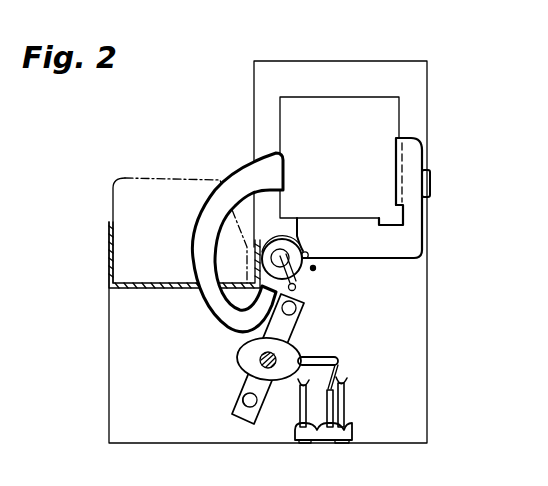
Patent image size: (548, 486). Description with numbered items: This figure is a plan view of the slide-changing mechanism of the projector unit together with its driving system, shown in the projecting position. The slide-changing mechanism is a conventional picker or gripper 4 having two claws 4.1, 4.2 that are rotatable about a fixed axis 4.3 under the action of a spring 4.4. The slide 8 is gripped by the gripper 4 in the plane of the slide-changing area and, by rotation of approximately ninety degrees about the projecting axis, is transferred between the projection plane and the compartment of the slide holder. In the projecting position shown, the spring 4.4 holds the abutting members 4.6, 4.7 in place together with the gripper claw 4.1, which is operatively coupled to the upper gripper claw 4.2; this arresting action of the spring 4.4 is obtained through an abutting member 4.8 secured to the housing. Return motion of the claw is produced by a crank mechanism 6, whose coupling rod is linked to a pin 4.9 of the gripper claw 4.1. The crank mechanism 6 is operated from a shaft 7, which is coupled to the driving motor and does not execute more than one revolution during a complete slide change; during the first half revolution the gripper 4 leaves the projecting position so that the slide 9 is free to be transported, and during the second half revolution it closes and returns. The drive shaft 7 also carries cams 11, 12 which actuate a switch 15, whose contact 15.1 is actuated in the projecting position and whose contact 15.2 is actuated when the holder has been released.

The picker 4 is at (229, 162).
The claw 4.1 is at (212, 312).
The claw 4.2 is at (412, 244).
The fixed axis 4.3 is at (299, 281).
The spring 4.4 is at (284, 253).
The abutting member 4.6 is at (309, 255).
The abutting member 4.7 is at (302, 241).
The abutting member 4.8 is at (431, 183).
The pin 4.9 is at (305, 306).
The crank mechanism 6 is at (290, 358).
The shaft 7 is at (250, 385).
The slide 8 is at (361, 111).
The slide 9 is at (120, 203).
The cam 11 is at (238, 353).
The cam 12 is at (294, 346).
The switch 15 is at (332, 399).
The contact 15.1 is at (348, 397).
The contact 15.2 is at (300, 389).